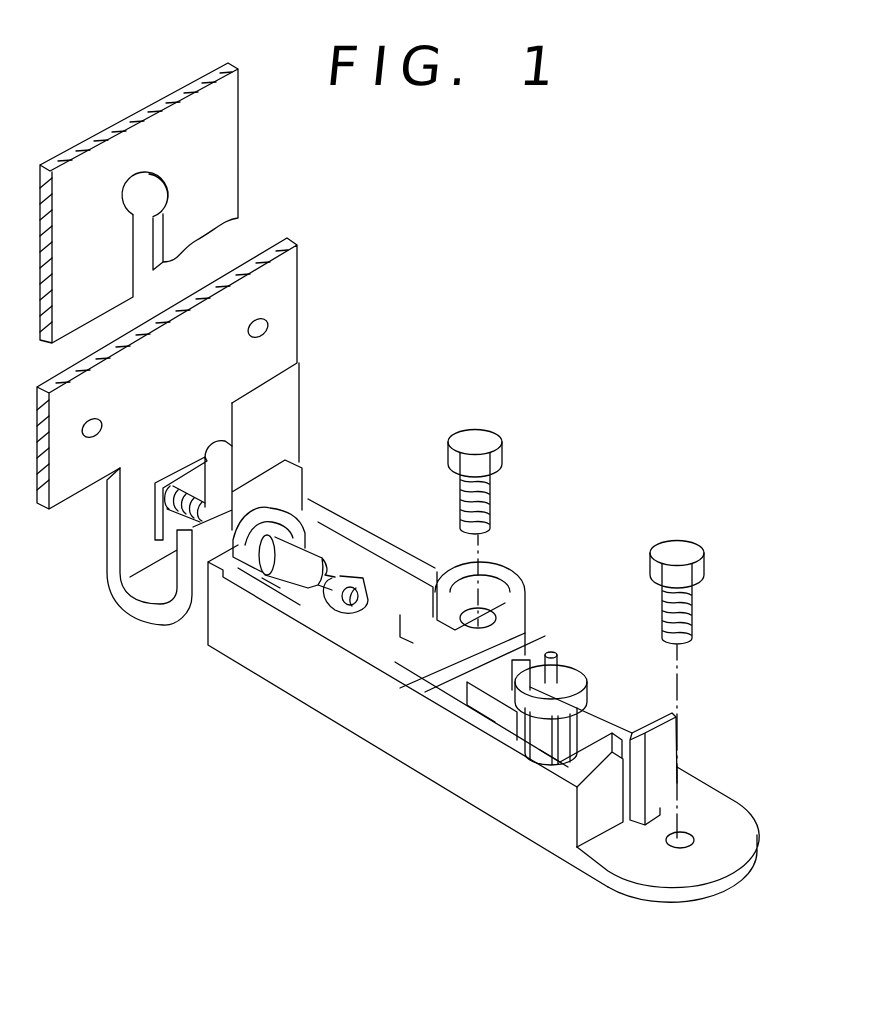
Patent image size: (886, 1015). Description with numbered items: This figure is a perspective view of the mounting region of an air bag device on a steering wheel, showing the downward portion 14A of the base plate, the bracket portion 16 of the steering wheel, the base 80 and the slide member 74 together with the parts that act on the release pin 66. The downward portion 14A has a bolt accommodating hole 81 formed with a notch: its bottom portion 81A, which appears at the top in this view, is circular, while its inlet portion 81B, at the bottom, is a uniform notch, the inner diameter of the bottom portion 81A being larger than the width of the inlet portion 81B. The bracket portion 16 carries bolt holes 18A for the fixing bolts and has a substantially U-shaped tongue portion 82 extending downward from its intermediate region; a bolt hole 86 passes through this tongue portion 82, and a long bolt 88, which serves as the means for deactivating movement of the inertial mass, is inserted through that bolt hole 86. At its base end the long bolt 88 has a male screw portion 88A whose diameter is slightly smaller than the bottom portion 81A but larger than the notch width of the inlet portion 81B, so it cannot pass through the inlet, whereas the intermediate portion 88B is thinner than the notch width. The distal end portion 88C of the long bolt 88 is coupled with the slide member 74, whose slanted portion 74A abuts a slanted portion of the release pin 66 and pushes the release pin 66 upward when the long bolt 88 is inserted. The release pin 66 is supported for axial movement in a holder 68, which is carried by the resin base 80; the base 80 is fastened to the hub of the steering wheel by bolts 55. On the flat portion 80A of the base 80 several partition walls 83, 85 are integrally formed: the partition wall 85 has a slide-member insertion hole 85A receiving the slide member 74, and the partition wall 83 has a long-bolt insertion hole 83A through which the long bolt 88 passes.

The downward portion 14A is at (232, 172).
The bolt accommodating hole 81 is at (130, 188).
The bottom portion 81A is at (138, 184).
The inlet portion 81B is at (232, 222).
The bracket portion 16 is at (298, 274).
The bolt holes 18A is at (270, 328).
The tongue portion 82 is at (138, 617).
The bolt hole 86 is at (238, 430).
The male screw portion 88A is at (200, 462).
The base 80 is at (327, 722).
The flat portion 80A is at (722, 815).
The slide member 74 is at (402, 664).
The slanted portion 74A is at (515, 720).
The partition wall 85 is at (527, 655).
The slide-member insertion hole 85A is at (467, 700).
The bolts 55 is at (500, 452).
The holder 68 is at (568, 678).
The release pin 66 is at (555, 650).
The long bolt 88 is at (285, 590).
The partition wall 83 is at (292, 560).
The long-bolt insertion hole 83A is at (263, 578).
The intermediate portion 88B is at (315, 505).
The distal end portion 88C is at (347, 593).